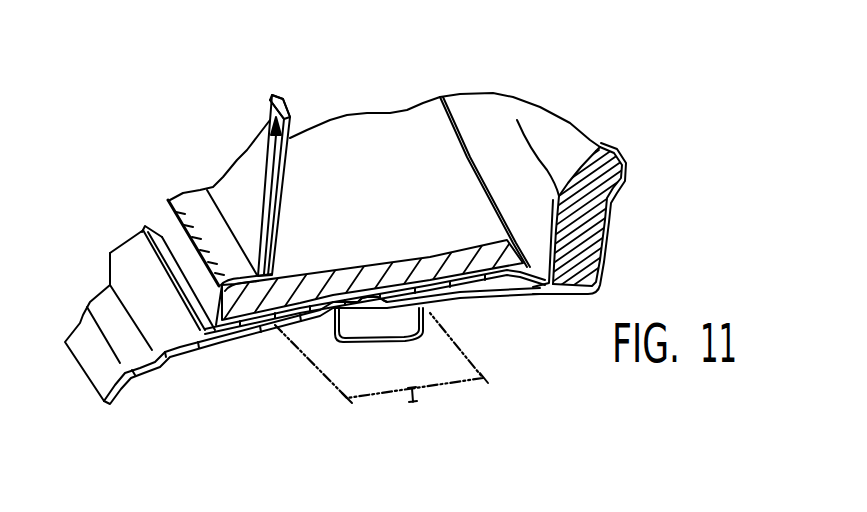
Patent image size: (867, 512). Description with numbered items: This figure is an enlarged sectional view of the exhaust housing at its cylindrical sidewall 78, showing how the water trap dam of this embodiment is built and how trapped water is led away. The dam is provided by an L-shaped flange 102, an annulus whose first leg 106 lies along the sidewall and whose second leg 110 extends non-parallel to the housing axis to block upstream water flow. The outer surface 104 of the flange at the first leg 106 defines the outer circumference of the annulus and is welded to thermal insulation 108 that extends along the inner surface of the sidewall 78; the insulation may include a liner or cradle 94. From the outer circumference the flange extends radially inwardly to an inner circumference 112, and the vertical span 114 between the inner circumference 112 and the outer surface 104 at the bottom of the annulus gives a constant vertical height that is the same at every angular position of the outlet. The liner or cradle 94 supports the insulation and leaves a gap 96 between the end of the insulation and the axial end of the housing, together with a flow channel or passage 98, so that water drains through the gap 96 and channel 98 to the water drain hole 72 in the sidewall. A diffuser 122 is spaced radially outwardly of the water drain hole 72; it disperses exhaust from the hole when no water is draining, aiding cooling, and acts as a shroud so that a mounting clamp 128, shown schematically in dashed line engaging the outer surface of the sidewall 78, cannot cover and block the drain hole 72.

The water drain hole 72 is at (371, 306).
The sidewall 78 is at (203, 345).
The liner or cradle 94 is at (416, 272).
The gap 96 is at (530, 263).
The flow channel or passage 98 is at (470, 278).
The L-shaped flange 102 is at (260, 147).
The outer surface 104 is at (200, 256).
The first leg 106 is at (253, 278).
The thermal insulation 108 is at (245, 312).
The second leg 110 is at (287, 190).
The inner circumference 112 is at (290, 102).
The vertical span 114 is at (267, 175).
The diffuser 122 is at (377, 342).
The mounting clamp 128 is at (417, 403).